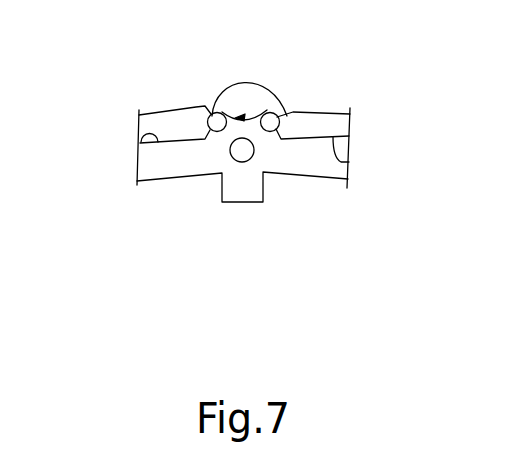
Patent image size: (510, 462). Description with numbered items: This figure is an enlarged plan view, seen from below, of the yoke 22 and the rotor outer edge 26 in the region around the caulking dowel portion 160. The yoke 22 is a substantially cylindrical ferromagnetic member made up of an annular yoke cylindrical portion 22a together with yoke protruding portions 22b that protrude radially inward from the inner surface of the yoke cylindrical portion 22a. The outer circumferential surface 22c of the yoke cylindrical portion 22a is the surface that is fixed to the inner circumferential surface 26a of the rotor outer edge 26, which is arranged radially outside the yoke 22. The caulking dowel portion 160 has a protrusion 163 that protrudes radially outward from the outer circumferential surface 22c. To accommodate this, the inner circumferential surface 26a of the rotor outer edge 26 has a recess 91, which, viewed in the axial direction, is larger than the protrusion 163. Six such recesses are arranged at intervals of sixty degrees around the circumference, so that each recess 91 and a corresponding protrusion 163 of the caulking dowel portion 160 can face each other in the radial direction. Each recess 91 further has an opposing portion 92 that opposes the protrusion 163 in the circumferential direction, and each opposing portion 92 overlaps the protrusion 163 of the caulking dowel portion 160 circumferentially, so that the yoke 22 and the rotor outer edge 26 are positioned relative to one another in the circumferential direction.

The yoke 22 is at (232, 263).
The yoke cylindrical portion 22a is at (157, 172).
The yoke protruding portion 22b is at (233, 186).
The outer circumferential surface 22c is at (141, 142).
The rotor outer edge 26 is at (343, 136).
The inner circumferential surface 26a is at (350, 162).
The recess 91 is at (254, 117).
The opposing portion 92 is at (222, 114).
The caulking dowel portion 160 is at (247, 150).
The protrusion 163 is at (226, 122).